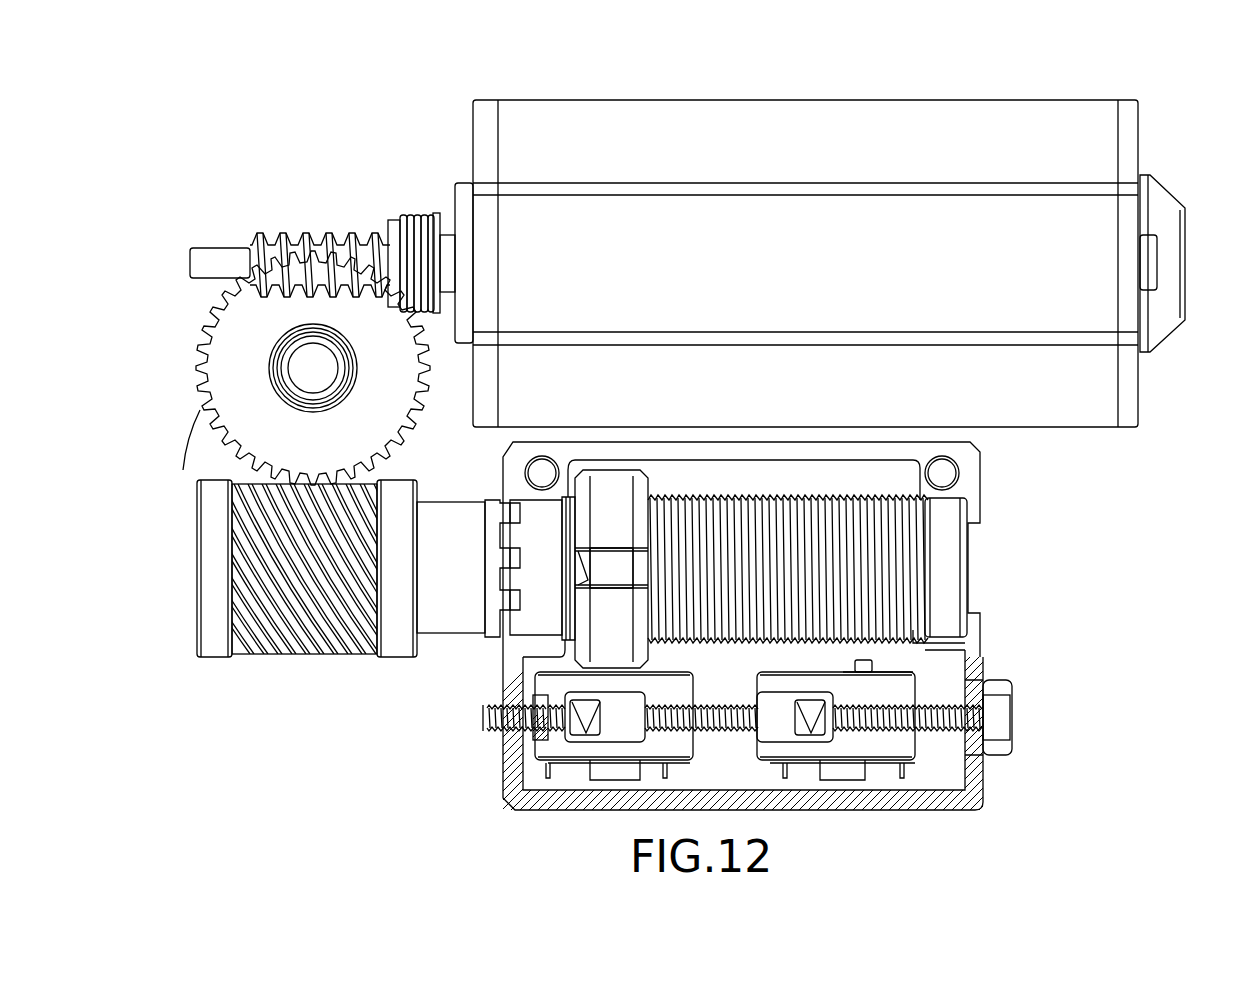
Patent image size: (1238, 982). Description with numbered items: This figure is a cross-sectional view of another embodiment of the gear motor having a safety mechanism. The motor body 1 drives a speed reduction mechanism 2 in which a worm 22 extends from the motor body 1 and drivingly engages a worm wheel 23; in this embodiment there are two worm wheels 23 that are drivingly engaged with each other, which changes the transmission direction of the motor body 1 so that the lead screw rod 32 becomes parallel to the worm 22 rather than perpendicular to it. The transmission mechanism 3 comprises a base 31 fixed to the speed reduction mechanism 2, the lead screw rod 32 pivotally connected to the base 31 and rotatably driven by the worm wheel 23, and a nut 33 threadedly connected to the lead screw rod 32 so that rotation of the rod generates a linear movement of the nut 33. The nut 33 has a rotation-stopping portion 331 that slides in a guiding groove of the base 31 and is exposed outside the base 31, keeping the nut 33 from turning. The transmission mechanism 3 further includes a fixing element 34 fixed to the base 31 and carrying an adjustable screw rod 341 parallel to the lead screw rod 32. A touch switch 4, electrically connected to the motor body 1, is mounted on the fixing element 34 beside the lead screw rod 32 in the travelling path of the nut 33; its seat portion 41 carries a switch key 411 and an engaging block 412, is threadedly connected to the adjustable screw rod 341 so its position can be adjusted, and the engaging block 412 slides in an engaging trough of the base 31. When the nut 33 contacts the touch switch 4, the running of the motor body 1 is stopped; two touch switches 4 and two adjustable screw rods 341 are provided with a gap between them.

The motor body 1 is at (875, 107).
The speed reduction mechanism 2 is at (245, 232).
The worm 22 is at (297, 248).
The worm wheel 23 is at (245, 525).
The transmission mechanism 3 is at (864, 494).
The base 31 is at (510, 774).
The lead screw rod 32 is at (883, 507).
The nut 33 is at (613, 487).
The rotation-stopping portion 331 is at (600, 565).
The fixing element 34 is at (1015, 717).
The adjustable screw rod 341 is at (985, 762).
The touch switch 4 is at (792, 730).
The seat portion 41 is at (878, 752).
The switch key 411 is at (865, 660).
The engaging block 412 is at (812, 718).